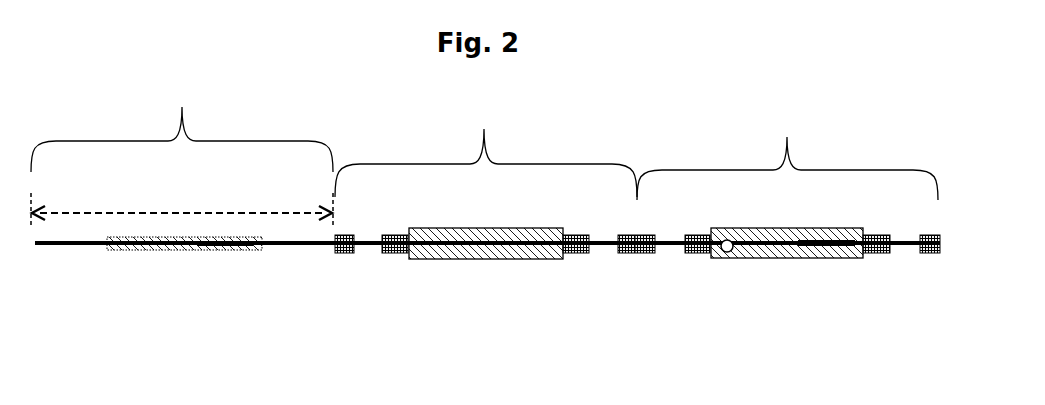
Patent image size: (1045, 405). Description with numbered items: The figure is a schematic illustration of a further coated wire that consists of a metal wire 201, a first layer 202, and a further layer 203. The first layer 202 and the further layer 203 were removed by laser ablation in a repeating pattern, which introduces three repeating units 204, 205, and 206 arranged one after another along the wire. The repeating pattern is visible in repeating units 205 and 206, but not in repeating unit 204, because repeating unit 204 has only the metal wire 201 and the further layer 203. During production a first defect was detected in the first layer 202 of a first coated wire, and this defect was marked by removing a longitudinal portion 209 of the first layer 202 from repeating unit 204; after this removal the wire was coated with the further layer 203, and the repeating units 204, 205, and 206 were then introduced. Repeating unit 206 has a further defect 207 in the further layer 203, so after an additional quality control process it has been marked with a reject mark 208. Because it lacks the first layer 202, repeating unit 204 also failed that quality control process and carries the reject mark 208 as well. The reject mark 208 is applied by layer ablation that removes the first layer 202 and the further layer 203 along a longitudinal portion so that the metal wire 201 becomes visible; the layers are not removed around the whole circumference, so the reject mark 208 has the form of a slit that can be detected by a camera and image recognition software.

The metal wire 201 is at (69, 245).
The first layer 202 is at (400, 252).
The further layer 203 is at (497, 247).
The repeating unit 204 is at (182, 164).
The repeating unit 205 is at (495, 176).
The repeating unit 206 is at (788, 180).
The further defect 207 is at (730, 250).
The reject mark 208 is at (237, 245).
The longitudinal portion 209 is at (182, 202).